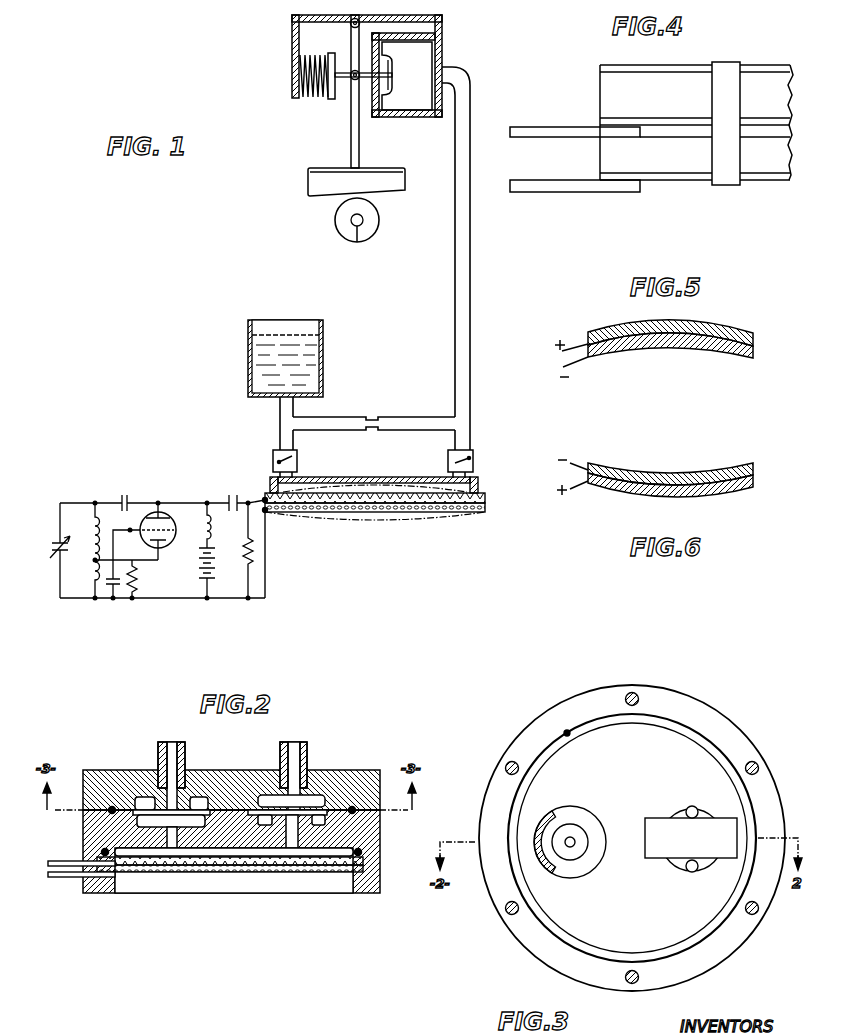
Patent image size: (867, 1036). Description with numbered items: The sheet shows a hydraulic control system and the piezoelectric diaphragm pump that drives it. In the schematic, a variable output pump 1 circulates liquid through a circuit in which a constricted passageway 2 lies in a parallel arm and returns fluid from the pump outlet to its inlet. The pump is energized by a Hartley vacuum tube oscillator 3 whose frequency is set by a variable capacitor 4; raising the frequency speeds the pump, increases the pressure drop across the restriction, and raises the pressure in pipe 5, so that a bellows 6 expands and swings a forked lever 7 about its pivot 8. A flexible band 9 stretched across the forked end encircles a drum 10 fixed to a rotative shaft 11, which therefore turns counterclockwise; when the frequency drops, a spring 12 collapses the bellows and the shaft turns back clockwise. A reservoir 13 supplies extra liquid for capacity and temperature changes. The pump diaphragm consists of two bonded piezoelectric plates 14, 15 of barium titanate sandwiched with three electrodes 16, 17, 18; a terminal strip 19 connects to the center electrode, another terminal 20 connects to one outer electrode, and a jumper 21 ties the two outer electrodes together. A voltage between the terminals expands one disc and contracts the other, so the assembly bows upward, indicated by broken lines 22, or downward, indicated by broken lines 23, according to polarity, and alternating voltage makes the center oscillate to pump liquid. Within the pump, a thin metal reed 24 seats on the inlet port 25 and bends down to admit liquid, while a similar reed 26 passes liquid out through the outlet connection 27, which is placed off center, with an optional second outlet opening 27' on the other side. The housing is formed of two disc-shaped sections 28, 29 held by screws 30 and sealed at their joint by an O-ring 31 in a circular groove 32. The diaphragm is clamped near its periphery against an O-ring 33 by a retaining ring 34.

In FIG. 1, the variable output pump 1 is at (395, 478).
In FIG. 1, the constricted passageway 2 is at (372, 415).
In FIG. 1, the Hartley vacuum tube oscillator 3 is at (172, 576).
In FIG. 1, the variable capacitor 4 is at (55, 535).
In FIG. 1, the pipe 5 is at (470, 390).
In FIG. 1, the bellows 6 is at (413, 108).
In FIG. 1, the forked lever 7 is at (359, 153).
In FIG. 1, the pivot 8 is at (359, 19).
In FIG. 1, the flexible band 9 is at (330, 196).
In FIG. 1, the drum 10 is at (372, 228).
In FIG. 1, the rotative shaft 11 is at (357, 242).
In FIG. 1, the spring 12 is at (310, 100).
In FIG. 1, the reservoir 13 is at (323, 358).
In FIG. 1, the piezoelectric plate 14 is at (485, 497).
In FIG. 4, the piezoelectric plate 14 is at (603, 90).
In FIG. 5, the piezoelectric plate 14 is at (712, 325).
In FIG. 6, the piezoelectric plate 14 is at (727, 462).
In FIG. 2, the piezoelectric plate 14 is at (293, 866).
In FIG. 1, the piezoelectric plate 15 is at (485, 508).
In FIG. 4, the piezoelectric plate 15 is at (603, 155).
In FIG. 5, the piezoelectric plate 15 is at (708, 349).
In FIG. 6, the piezoelectric plate 15 is at (728, 488).
In FIG. 2, the piezoelectric plate 15 is at (258, 873).
In FIG. 4, the outer electrode 16 is at (605, 68).
In FIG. 4, the center electrode 17 is at (605, 121).
In FIG. 4, the outer electrode 18 is at (665, 183).
In FIG. 1, the terminal strip 19 is at (262, 497).
In FIG. 4, the terminal strip 19 is at (550, 127).
In FIG. 5, the terminal strip 19 is at (582, 334).
In FIG. 6, the terminal strip 19 is at (595, 466).
In FIG. 2, the terminal strip 19 is at (70, 861).
In FIG. 1, the terminal 20 is at (268, 516).
In FIG. 4, the terminal 20 is at (552, 192).
In FIG. 5, the terminal 20 is at (585, 362).
In FIG. 6, the terminal 20 is at (577, 488).
In FIG. 2, the terminal 20 is at (68, 878).
In FIG. 4, the jumper 21 is at (728, 62).
In FIG. 1, the broken lines 22 is at (340, 479).
In FIG. 1, the broken lines 23 is at (355, 524).
In FIG. 2, the reed 24 is at (200, 790).
In FIG. 2, the inlet port 25 is at (170, 800).
In FIG. 3, the inlet port 25 is at (573, 838).
In FIG. 2, the reed 26 is at (313, 805).
In FIG. 3, the reed 26 is at (655, 850).
In FIG. 2, the outlet connection 27 is at (309, 771).
In FIG. 3, the outlet connection 27 is at (694, 799).
In FIG. 3, the second outlet opening 27' is at (694, 884).
In FIG. 2, the housing section 28 is at (377, 770).
In FIG. 2, the housing section 29 is at (380, 833).
In FIG. 3, the screws 30 is at (638, 698).
In FIG. 2, the O-ring 31 is at (112, 806).
In FIG. 3, the circular groove 32 is at (567, 733).
In FIG. 2, the O-ring 33 is at (362, 852).
In FIG. 2, the retaining ring 34 is at (350, 877).